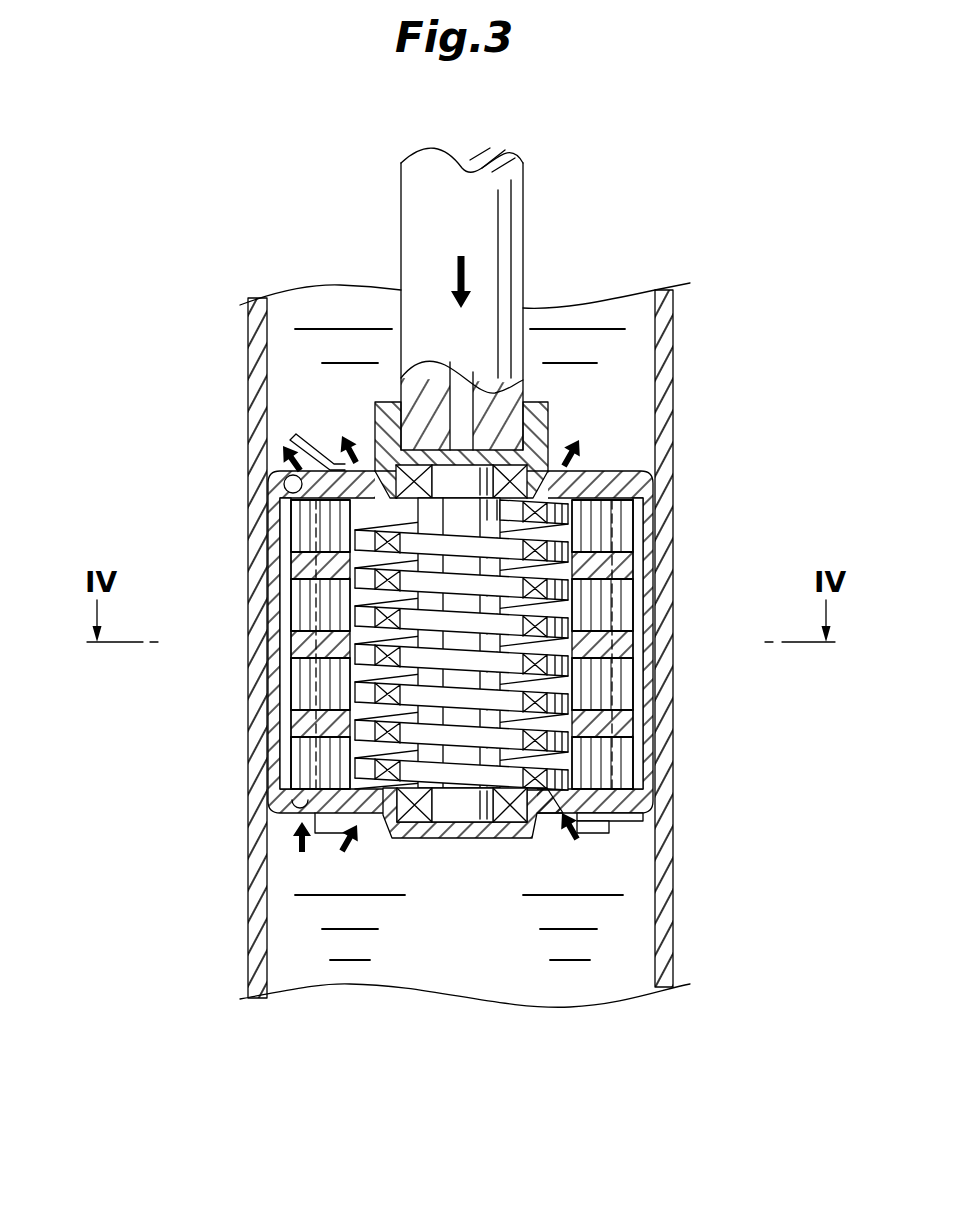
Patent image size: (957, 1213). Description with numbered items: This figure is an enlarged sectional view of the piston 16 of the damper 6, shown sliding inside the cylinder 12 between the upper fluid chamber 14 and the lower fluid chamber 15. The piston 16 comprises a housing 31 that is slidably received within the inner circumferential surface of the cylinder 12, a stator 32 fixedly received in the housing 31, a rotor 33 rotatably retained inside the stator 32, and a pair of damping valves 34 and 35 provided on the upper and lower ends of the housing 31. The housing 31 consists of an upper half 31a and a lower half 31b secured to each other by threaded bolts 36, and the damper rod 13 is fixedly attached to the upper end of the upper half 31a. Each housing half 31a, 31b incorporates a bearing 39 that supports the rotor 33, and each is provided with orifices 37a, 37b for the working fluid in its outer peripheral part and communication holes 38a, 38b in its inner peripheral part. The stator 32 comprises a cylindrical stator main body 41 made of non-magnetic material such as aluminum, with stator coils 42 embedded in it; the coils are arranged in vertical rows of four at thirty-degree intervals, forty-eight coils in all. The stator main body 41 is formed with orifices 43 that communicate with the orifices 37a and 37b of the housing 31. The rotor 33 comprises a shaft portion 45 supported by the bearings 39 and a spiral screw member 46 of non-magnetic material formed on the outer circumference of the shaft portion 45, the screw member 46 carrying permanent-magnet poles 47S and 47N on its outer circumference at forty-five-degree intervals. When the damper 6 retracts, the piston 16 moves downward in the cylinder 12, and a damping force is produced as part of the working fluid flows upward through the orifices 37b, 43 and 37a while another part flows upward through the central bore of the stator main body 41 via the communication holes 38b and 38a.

The damper 6 is at (220, 262).
The cylinder 12 is at (266, 904).
The damper rod 13 is at (523, 246).
The upper fluid chamber 14 is at (637, 318).
The lower fluid chamber 15 is at (635, 930).
The piston 16 is at (630, 405).
The housing 31 is at (640, 466).
The upper half 31a is at (648, 572).
The lower half 31b is at (648, 800).
The stator 32 is at (652, 632).
The rotor 33 is at (548, 708).
The damping valve 34 is at (298, 430).
The damping valve 35 is at (630, 820).
The threaded bolts 36 is at (600, 832).
The orifices 37a is at (300, 465).
The orifices 37b is at (300, 810).
The communication holes 38a is at (600, 450).
The communication holes 38b is at (555, 800).
The bearing 39 is at (377, 415).
The stator main body 41 is at (290, 640).
The stator coils 42 is at (297, 595).
The orifices 43 is at (330, 735).
The shaft portion 45 is at (440, 510).
The spiral screw member 46 is at (355, 542).
The magnetic poles (S poles) 47S is at (462, 745).
The magnetic poles (N poles) 47N is at (535, 760).